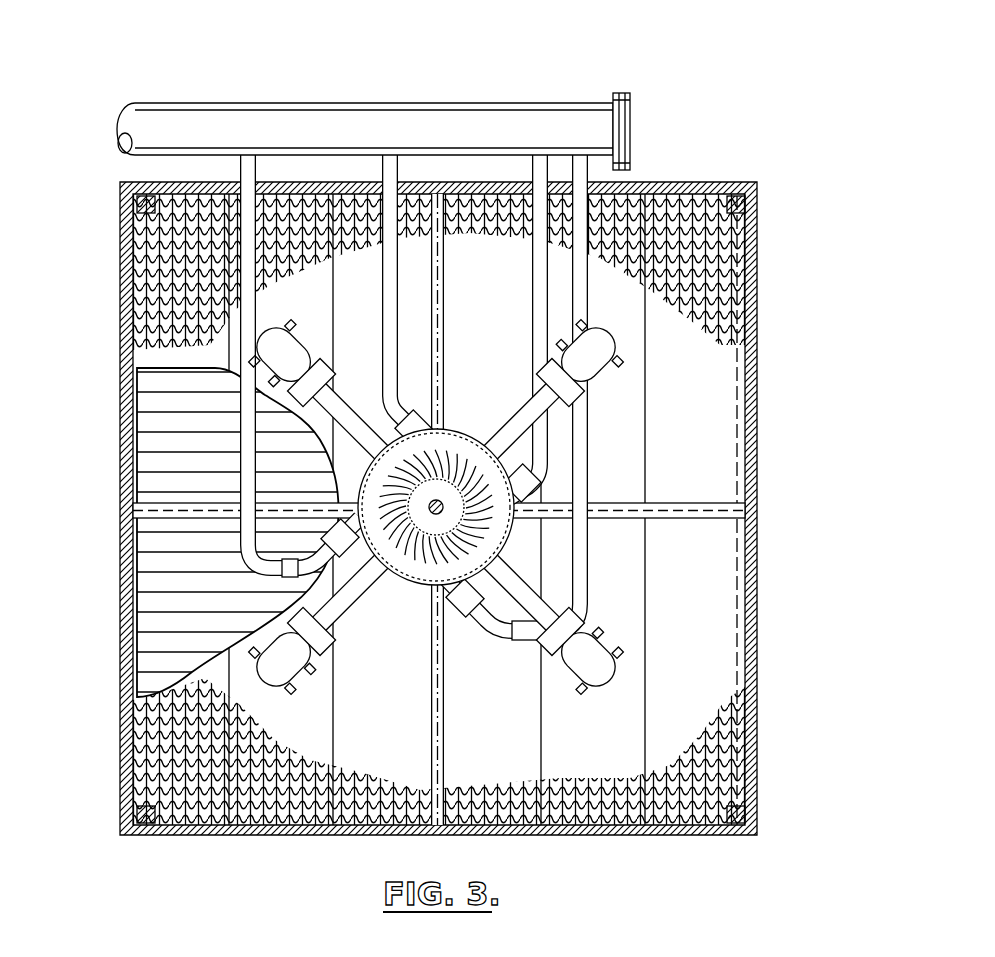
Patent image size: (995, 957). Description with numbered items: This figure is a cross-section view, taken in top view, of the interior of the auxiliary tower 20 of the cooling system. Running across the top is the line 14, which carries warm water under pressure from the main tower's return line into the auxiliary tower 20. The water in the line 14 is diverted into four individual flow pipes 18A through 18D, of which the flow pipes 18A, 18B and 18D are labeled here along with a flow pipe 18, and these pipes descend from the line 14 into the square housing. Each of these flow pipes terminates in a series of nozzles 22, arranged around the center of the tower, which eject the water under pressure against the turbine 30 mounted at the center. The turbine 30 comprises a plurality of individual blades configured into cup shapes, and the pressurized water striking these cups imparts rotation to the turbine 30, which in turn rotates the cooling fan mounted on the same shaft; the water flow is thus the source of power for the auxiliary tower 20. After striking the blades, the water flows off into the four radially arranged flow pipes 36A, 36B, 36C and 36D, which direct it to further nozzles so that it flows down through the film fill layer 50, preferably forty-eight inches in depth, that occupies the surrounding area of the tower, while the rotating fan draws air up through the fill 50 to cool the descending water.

The line 14 is at (298, 130).
The flow pipe 18 is at (390, 283).
The flow pipe 18A is at (650, 182).
The flow pipe 18B is at (542, 290).
The flow pipe 18D is at (253, 452).
The auxiliary tower 20 is at (435, 492).
The nozzles 22 is at (430, 417).
The turbine 30 is at (513, 520).
The flow pipe 36A is at (563, 387).
The flow pipe 36B is at (594, 640).
The flow pipe 36C is at (313, 627).
The flow pipe 36D is at (287, 357).
The film fill layer 50 is at (760, 228).